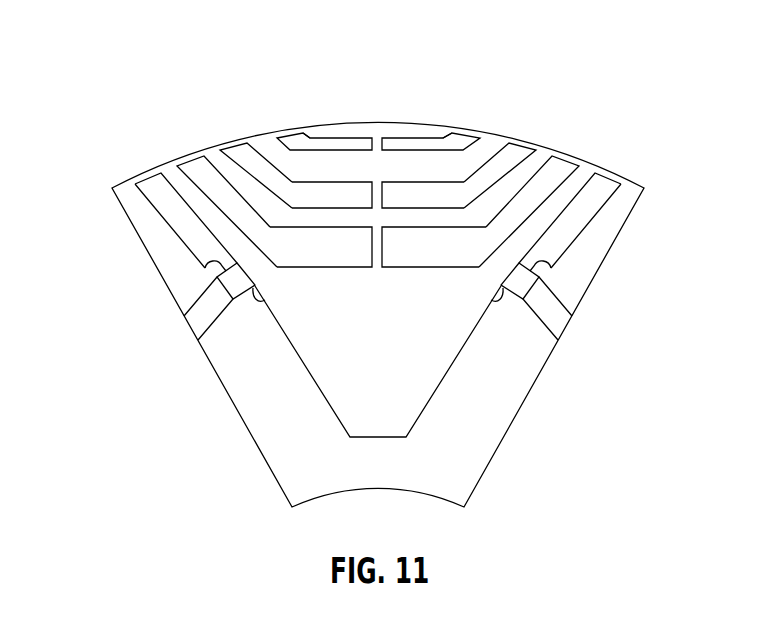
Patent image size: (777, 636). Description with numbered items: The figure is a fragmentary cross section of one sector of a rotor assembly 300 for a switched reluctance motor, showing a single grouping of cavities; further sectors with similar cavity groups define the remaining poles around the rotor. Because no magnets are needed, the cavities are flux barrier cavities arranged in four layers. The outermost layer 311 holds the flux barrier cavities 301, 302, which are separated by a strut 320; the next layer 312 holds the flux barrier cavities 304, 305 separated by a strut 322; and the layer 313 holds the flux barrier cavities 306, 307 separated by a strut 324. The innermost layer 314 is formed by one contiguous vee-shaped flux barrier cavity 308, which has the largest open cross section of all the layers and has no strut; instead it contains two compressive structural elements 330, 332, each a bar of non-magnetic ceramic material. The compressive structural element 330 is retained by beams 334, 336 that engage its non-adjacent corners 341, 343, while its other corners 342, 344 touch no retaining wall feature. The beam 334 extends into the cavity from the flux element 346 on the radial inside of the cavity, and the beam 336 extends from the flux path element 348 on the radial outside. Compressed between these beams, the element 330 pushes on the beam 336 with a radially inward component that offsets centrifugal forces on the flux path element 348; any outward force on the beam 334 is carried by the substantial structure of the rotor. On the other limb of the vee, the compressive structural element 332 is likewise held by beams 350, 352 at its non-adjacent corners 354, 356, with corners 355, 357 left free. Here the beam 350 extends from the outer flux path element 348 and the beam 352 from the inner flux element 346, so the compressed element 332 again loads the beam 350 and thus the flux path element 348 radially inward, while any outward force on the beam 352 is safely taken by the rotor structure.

The rotor assembly 300 is at (609, 122).
The flux barrier cavity 301 is at (303, 133).
The flux barrier cavity 302 is at (414, 147).
The flux barrier cavity 304 is at (240, 153).
The flux barrier cavity 305 is at (523, 156).
The flux barrier cavity 306 is at (192, 170).
The flux barrier cavity 307 is at (582, 153).
The flux barrier cavity 308 is at (152, 190).
The layer 311 is at (473, 122).
The layer 312 is at (510, 134).
The layer 313 is at (589, 157).
The layer 314 is at (608, 188).
The strut 320 is at (376, 144).
The strut 322 is at (378, 182).
The strut 324 is at (383, 260).
The compressive structural element 330 is at (212, 303).
The compressive structural element 332 is at (562, 338).
The beam 334 is at (218, 270).
The beam 336 is at (258, 301).
The corner 341 is at (215, 282).
The corner 342 is at (238, 262).
The corner 343 is at (250, 291).
The corner 344 is at (203, 350).
The flux element 346 is at (272, 377).
The flux path element 348 is at (408, 309).
The beam 350 is at (498, 308).
The beam 352 is at (539, 279).
The corner 354 is at (494, 290).
The corner 355 is at (528, 266).
The corner 356 is at (571, 306).
The corner 357 is at (560, 348).